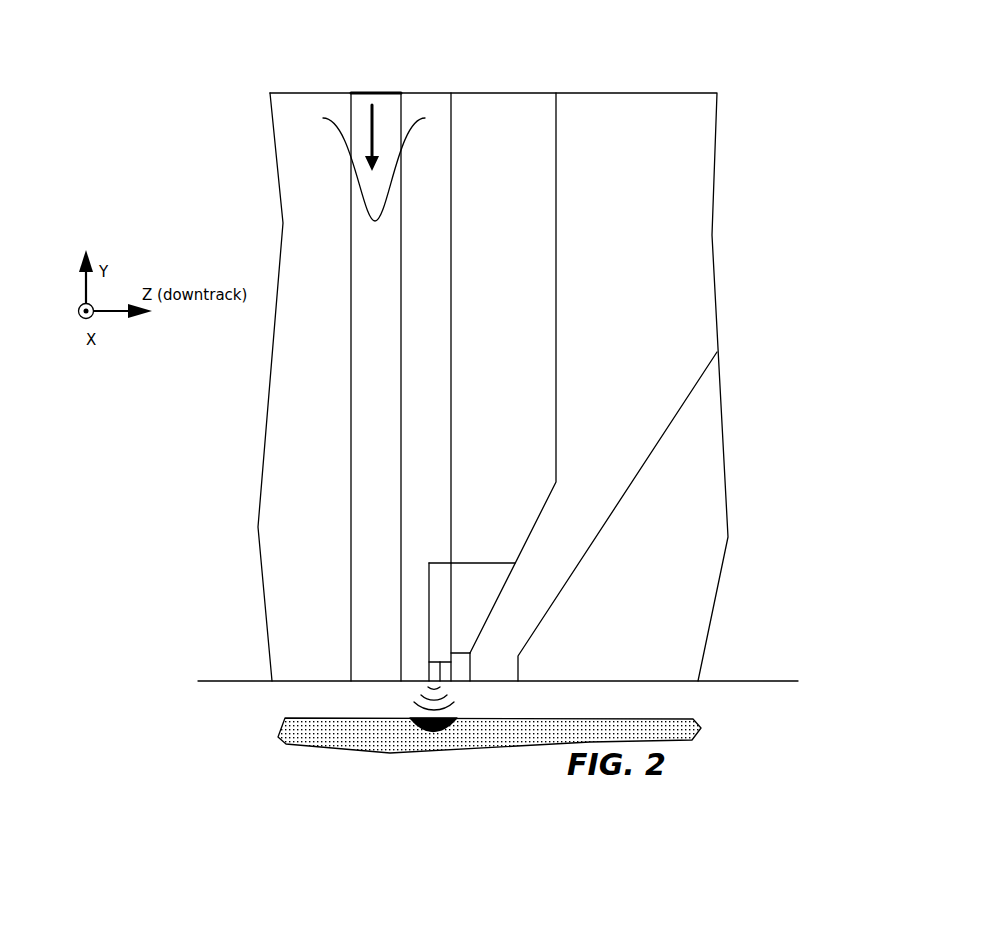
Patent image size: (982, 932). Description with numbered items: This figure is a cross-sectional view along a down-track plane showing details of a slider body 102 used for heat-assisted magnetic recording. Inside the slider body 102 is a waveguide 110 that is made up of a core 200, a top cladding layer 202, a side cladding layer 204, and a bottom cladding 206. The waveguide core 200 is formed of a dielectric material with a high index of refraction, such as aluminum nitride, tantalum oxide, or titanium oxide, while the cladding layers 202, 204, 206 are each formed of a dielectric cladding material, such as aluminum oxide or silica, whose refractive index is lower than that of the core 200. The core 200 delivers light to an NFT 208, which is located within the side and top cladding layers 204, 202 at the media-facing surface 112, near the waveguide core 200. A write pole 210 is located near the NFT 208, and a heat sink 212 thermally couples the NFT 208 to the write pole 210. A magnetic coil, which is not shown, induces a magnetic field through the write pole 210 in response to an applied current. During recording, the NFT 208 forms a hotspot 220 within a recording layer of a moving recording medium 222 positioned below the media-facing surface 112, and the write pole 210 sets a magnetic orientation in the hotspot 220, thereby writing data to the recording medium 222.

The slider body 102 is at (254, 46).
The waveguide 110 is at (262, 196).
The media-facing surface 112 is at (790, 684).
The waveguide core 200 is at (378, 106).
The top cladding layer 202 is at (543, 113).
The side cladding layer 204 is at (422, 107).
The bottom cladding 206 is at (328, 107).
The NFT 208 is at (429, 608).
The write pole 210 is at (505, 676).
The heat sink 212 is at (466, 568).
The hotspot 220 is at (430, 731).
The recording medium 222 is at (655, 718).